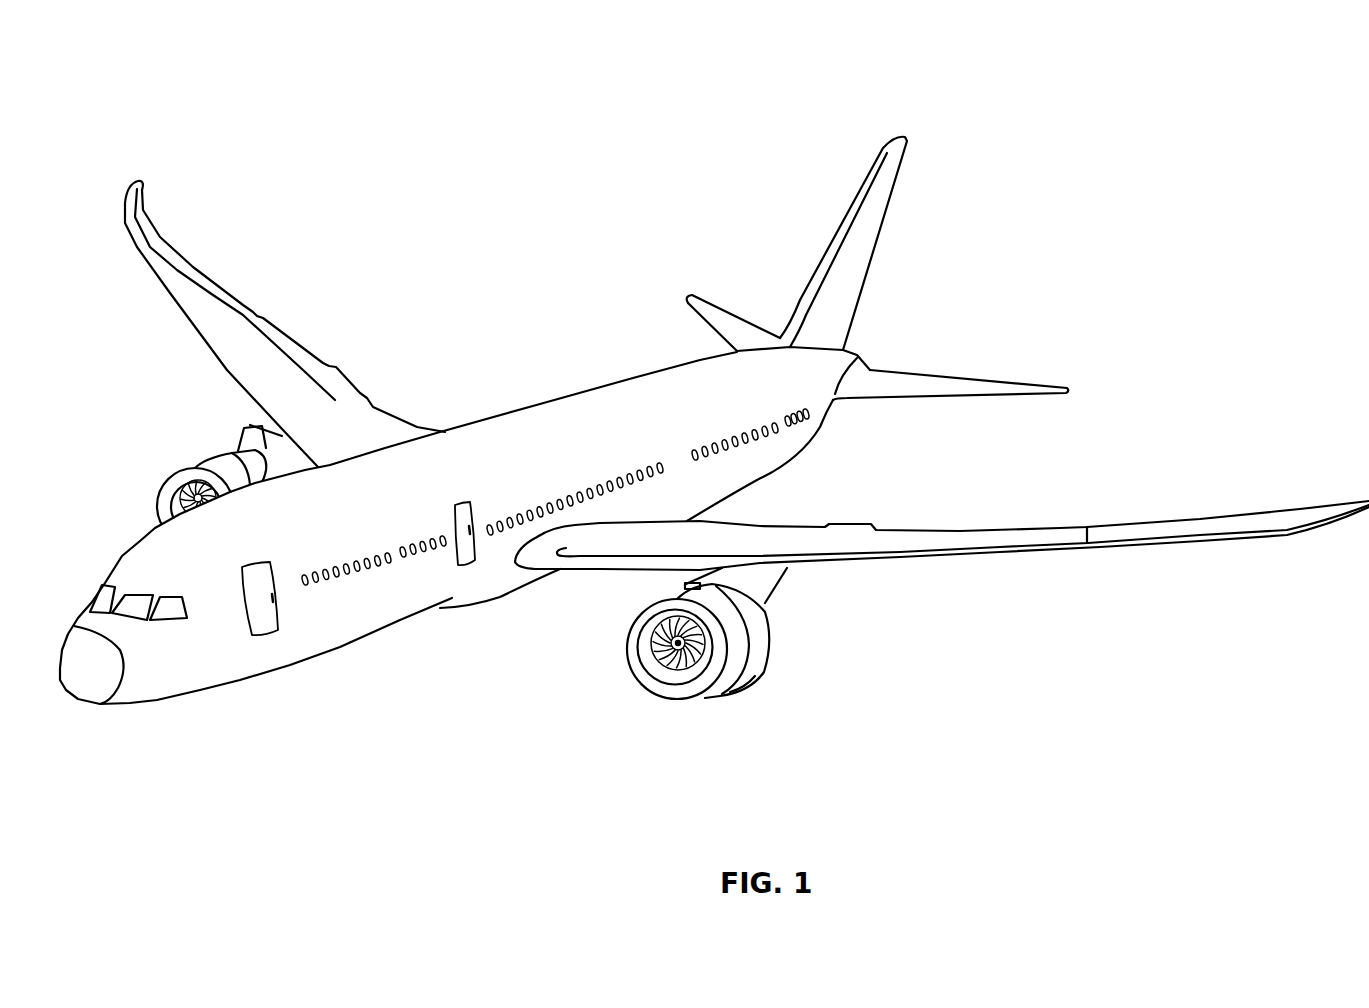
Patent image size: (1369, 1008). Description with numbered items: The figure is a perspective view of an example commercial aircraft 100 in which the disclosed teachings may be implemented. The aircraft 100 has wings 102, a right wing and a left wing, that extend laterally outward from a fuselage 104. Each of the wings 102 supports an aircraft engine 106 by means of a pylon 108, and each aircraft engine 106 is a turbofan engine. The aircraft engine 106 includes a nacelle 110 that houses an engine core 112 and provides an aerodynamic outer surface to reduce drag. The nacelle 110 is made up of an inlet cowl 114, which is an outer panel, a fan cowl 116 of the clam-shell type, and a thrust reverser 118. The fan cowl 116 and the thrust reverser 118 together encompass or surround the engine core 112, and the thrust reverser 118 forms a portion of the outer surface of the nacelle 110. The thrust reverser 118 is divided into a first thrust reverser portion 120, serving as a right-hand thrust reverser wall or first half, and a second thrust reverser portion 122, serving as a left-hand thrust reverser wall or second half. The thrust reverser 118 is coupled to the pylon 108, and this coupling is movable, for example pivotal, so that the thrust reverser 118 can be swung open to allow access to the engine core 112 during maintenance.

The aircraft 100 is at (476, 78).
The wings 102 is at (128, 196).
The fuselage 104 is at (622, 380).
The aircraft engine 106 is at (218, 467).
The pylon 108 is at (260, 452).
The nacelle 110 is at (750, 697).
The engine core 112 is at (624, 640).
The inlet cowl 114 is at (662, 693).
The fan cowl 116 is at (735, 680).
The thrust reverser 118 is at (762, 637).
The first thrust reverser portion 120 is at (697, 586).
The second thrust reverser portion 122 is at (763, 615).